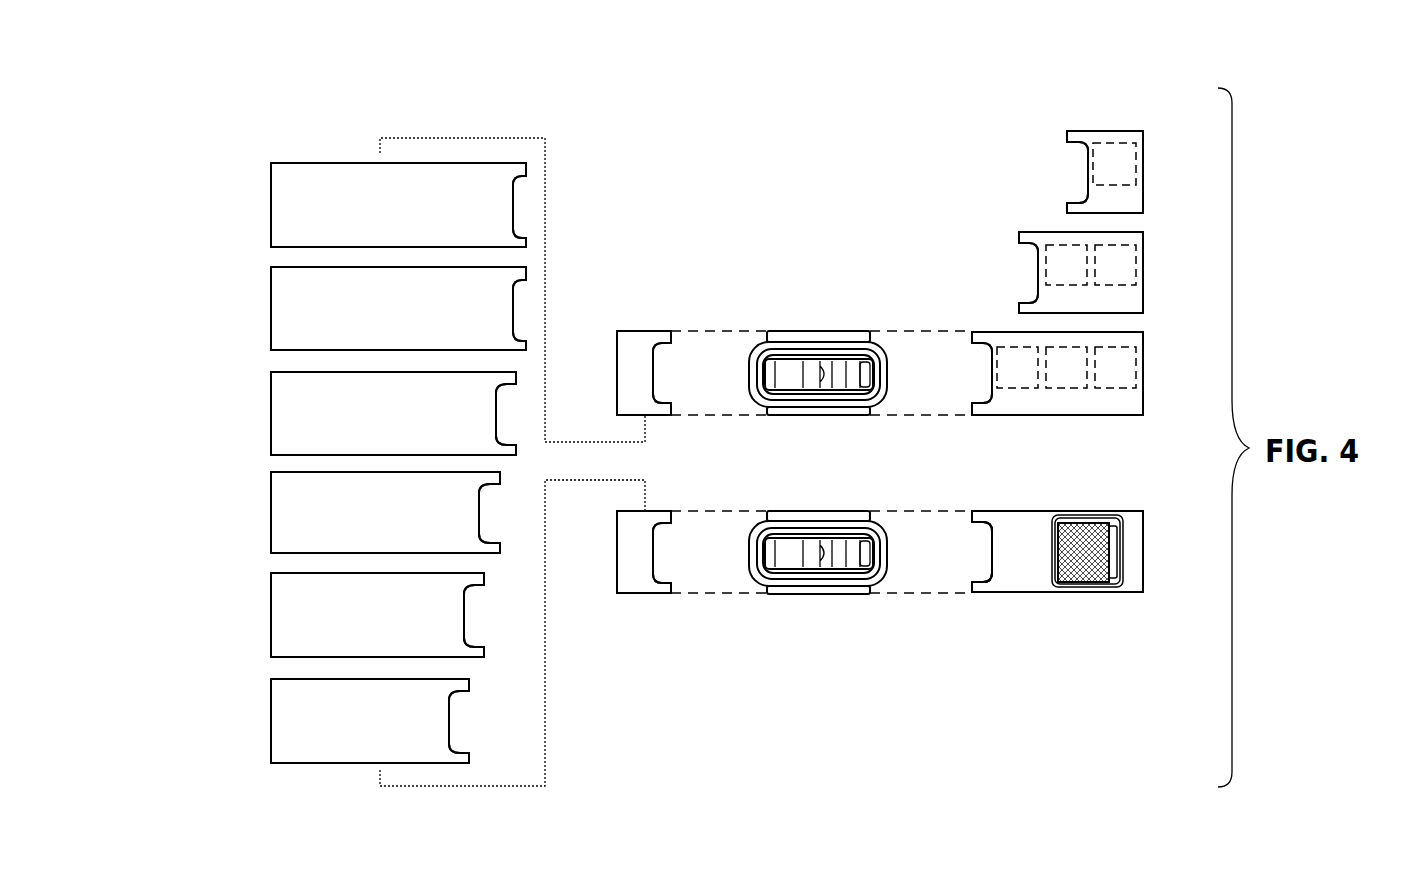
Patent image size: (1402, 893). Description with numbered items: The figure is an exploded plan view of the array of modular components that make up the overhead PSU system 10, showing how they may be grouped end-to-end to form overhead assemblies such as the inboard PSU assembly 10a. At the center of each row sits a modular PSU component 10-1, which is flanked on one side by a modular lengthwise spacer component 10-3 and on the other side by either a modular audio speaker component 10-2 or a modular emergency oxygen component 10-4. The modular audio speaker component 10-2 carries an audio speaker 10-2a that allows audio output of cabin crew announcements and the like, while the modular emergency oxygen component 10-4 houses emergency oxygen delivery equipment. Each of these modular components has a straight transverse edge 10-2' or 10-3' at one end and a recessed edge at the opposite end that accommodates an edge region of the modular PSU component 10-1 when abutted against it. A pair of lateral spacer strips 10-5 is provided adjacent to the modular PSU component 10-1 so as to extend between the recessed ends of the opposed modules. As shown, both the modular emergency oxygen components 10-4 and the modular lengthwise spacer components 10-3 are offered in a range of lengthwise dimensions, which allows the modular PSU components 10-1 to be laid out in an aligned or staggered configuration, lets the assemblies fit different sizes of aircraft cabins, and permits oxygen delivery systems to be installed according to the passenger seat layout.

The overhead PSU system 10 is at (803, 93).
The modular lengthwise spacer component 10-3 is at (482, 433).
The transverse edge 10-3' is at (430, 463).
The modular PSU component 10-1 is at (816, 323).
The lateral spacer strips 10-5 is at (773, 336).
The modular emergency oxygen component 10-4 is at (1077, 124).
The transverse edge 10-2' is at (1090, 343).
The audio speaker 10-2a is at (1080, 542).
The modular audio speaker component 10-2 is at (1057, 598).
The inboard PSU assembly 10a is at (1150, 562).